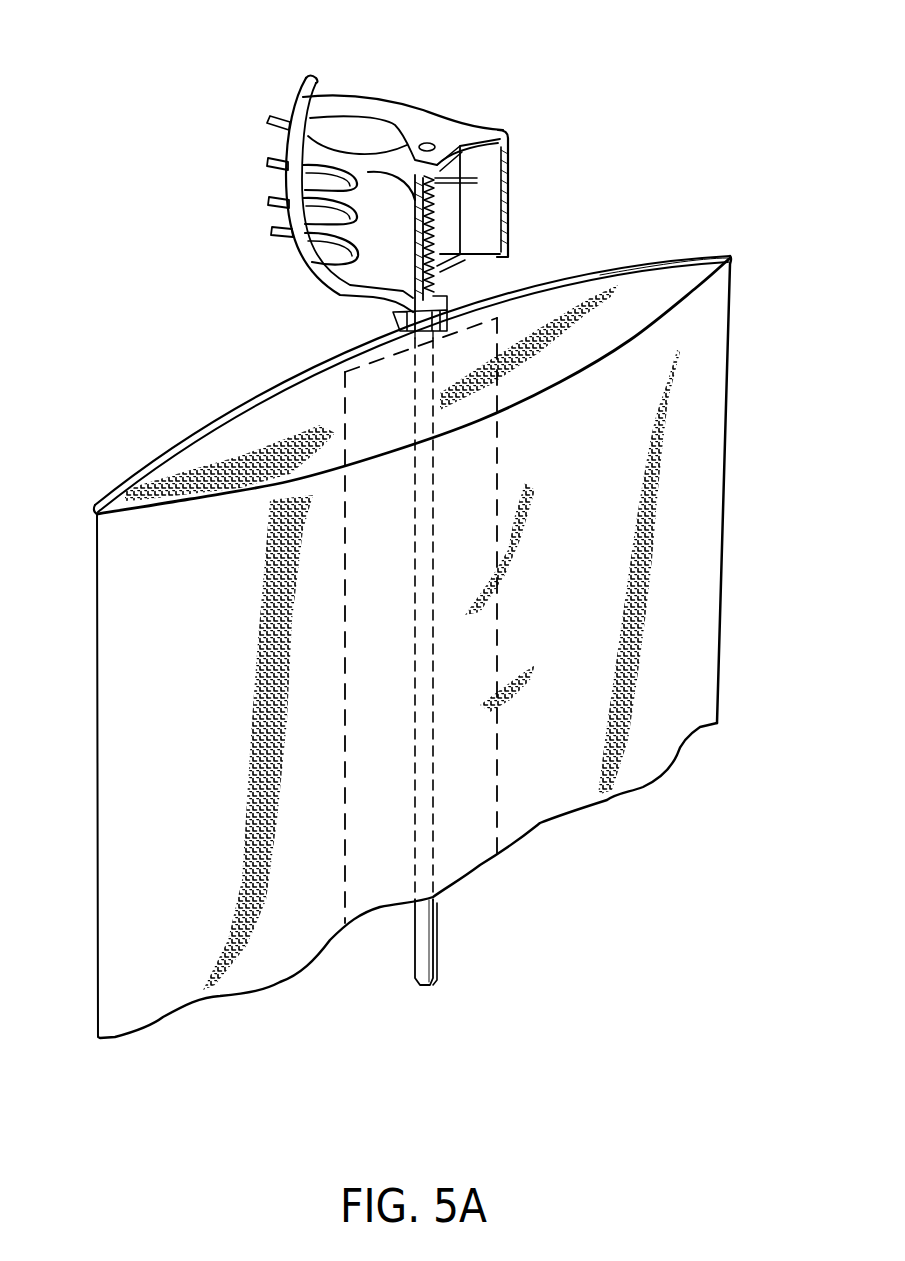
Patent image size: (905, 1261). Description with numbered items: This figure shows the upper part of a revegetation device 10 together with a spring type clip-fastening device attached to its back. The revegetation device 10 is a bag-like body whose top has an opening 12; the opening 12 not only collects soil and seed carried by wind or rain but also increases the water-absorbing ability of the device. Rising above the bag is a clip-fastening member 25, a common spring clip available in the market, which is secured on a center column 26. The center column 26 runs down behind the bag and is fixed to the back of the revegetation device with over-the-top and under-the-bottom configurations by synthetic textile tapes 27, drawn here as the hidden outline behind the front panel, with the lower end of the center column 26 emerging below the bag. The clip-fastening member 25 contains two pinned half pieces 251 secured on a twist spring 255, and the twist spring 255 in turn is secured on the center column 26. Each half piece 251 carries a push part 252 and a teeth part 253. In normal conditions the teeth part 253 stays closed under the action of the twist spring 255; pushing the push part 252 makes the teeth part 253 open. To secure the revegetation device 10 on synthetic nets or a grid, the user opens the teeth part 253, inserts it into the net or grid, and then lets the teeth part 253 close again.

The revegetation device 10 is at (728, 503).
The opening 12 is at (673, 262).
The clip-fastening member 25 is at (403, 185).
The half piece 251 is at (398, 103).
The push part 252 is at (508, 150).
The teeth part 253 is at (306, 78).
The twist spring 255 is at (432, 207).
The center column 26 is at (437, 953).
The synthetic textile tapes 27 is at (493, 840).